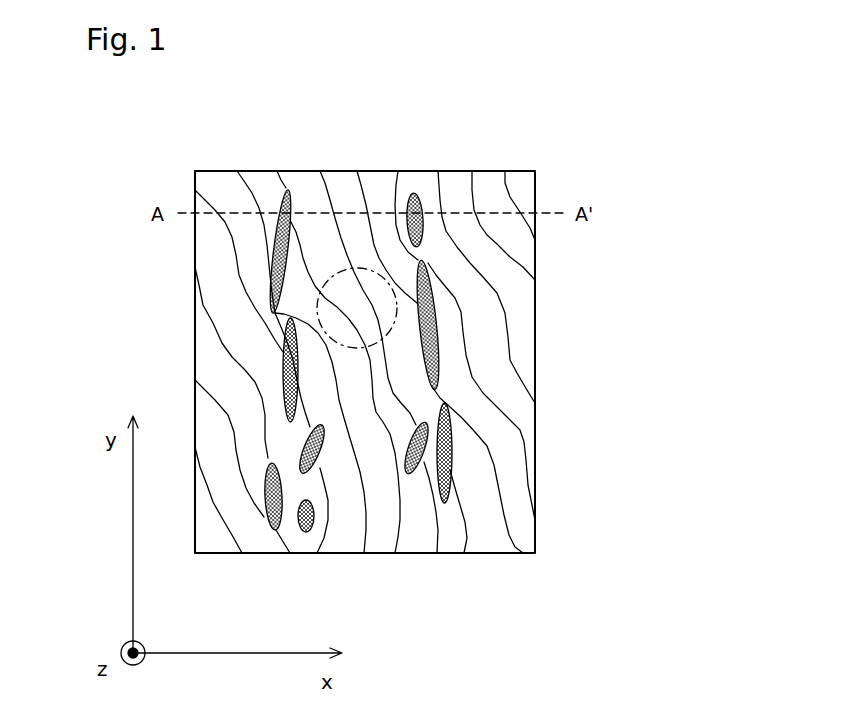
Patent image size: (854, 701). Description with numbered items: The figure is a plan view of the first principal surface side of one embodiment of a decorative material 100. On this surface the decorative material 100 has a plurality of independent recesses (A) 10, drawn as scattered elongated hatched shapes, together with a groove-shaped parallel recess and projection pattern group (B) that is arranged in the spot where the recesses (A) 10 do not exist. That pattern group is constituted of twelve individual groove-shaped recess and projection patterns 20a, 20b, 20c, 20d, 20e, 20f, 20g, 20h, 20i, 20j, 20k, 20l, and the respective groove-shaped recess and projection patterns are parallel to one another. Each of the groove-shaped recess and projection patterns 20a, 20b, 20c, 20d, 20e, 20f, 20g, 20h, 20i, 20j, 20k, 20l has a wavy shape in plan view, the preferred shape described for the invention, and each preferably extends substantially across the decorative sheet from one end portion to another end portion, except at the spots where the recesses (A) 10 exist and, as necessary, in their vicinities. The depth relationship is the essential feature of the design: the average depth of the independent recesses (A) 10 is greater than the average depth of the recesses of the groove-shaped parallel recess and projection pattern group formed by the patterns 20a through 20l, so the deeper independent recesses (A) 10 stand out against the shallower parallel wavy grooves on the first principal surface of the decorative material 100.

The decorative material 100 is at (706, 108).
The independent recesses (A) 10 is at (288, 191).
The groove-shaped recess and projection pattern 20a is at (225, 553).
The groove-shaped recess and projection pattern 20b is at (272, 553).
The groove-shaped recess and projection pattern 20c is at (317, 553).
The groove-shaped recess and projection pattern 20d is at (362, 553).
The groove-shaped recess and projection pattern 20e is at (392, 553).
The groove-shaped recess and projection pattern 20f is at (427, 553).
The groove-shaped recess and projection pattern 20g is at (463, 553).
The groove-shaped recess and projection pattern 20h is at (512, 537).
The groove-shaped recess and projection pattern 20i is at (523, 438).
The groove-shaped recess and projection pattern 20j is at (512, 363).
The groove-shaped recess and projection pattern 20k is at (522, 270).
The groove-shaped recess and projection pattern 20l is at (508, 191).